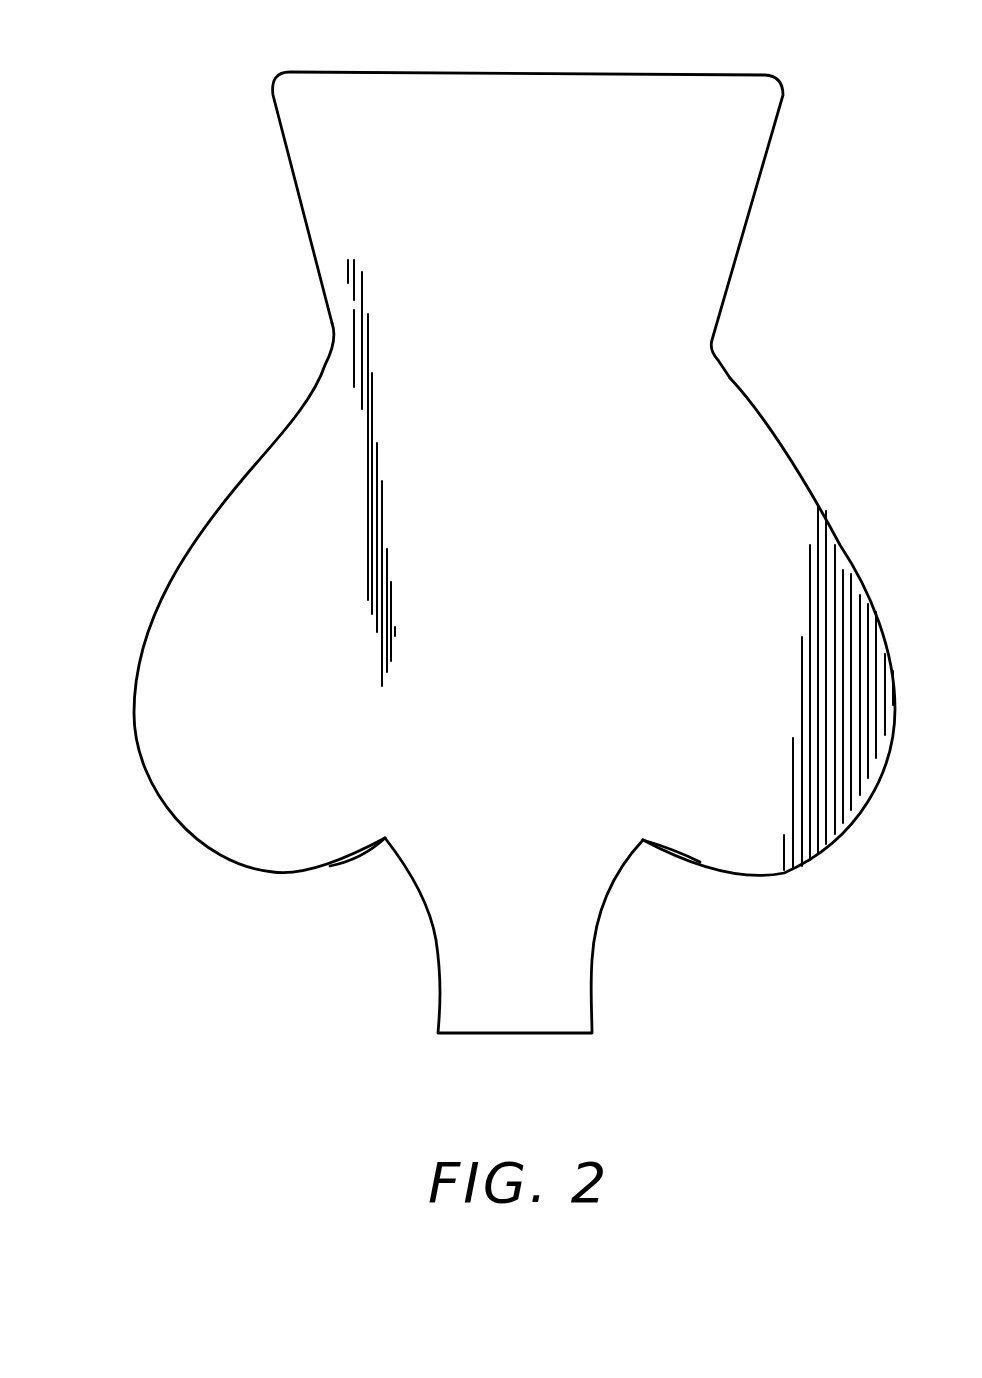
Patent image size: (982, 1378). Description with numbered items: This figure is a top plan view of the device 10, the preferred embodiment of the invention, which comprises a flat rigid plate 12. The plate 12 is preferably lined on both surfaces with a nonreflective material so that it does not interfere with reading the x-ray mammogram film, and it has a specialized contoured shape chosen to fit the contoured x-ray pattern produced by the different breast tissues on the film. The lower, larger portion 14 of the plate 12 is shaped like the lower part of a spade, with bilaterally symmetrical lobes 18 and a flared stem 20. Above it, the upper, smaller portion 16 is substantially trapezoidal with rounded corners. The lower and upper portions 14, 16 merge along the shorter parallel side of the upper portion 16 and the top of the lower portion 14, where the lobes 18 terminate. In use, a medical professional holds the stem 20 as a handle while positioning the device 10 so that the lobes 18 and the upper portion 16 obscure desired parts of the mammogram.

The device 10 is at (259, 308).
The flat rigid plate 12 is at (518, 548).
The lower, larger portion 14 is at (137, 1024).
The upper, smaller portion 16 is at (785, 80).
The lobes 18 is at (322, 866).
The flared stem 20 is at (587, 980).